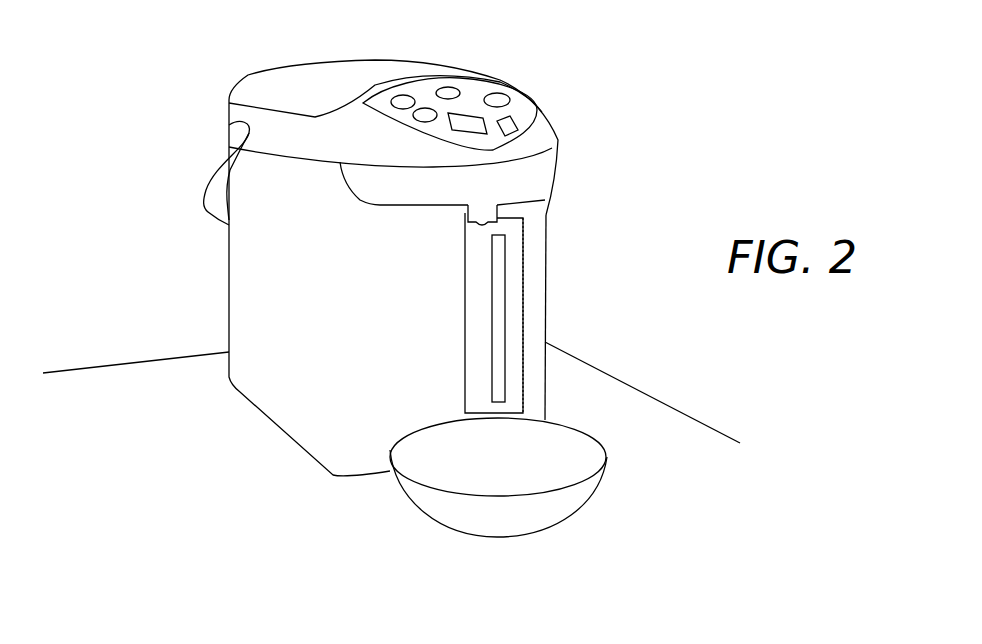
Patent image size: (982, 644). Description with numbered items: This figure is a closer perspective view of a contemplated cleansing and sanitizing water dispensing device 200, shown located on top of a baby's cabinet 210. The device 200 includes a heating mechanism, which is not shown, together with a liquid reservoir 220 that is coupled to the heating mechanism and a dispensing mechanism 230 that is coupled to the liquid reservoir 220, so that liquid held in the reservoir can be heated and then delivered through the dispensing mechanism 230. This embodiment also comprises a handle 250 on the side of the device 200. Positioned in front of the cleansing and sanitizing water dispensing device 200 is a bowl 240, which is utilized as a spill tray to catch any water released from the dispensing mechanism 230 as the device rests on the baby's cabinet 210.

The cleansing and sanitizing water dispensing device 200 is at (604, 88).
The baby's cabinet 210 is at (653, 390).
The liquid reservoir 220 is at (505, 305).
The dispensing mechanism 230 is at (503, 212).
The bowl 240 is at (433, 507).
The handle 250 is at (203, 208).